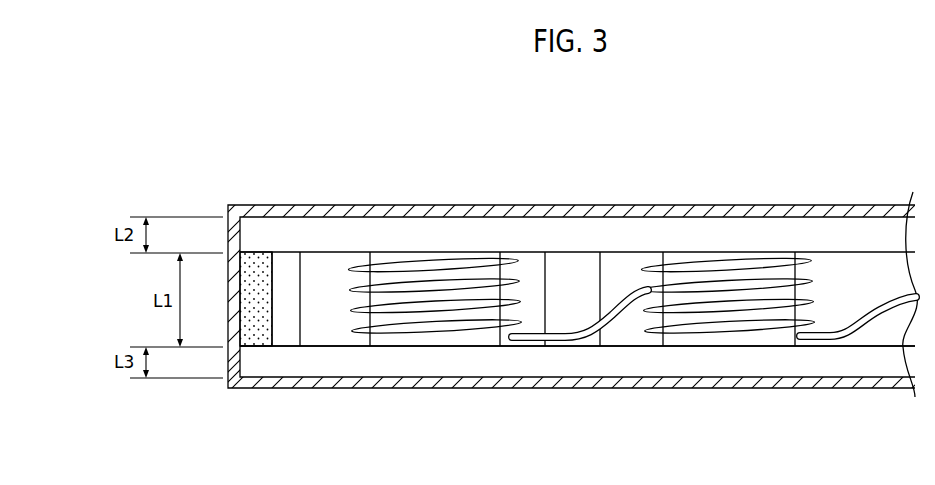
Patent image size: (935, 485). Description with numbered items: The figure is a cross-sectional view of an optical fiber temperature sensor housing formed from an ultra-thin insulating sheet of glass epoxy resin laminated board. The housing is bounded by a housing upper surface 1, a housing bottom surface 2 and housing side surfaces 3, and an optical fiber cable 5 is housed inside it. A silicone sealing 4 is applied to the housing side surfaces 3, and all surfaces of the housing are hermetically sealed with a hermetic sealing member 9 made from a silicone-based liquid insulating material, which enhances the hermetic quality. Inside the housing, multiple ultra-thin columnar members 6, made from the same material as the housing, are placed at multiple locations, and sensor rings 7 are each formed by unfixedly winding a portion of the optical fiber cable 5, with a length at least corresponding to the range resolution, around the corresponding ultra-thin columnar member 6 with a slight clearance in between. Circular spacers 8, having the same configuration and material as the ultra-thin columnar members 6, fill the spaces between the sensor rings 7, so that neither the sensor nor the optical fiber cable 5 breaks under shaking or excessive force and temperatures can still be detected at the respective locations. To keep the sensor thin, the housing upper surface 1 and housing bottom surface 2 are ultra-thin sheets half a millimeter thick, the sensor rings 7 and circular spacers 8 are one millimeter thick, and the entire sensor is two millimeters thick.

The housing upper surface 1 is at (430, 232).
The housing bottom surface 2 is at (336, 362).
The housing side surfaces 3 is at (288, 268).
The silicone sealing 4 is at (254, 332).
The optical fiber cable 5 is at (617, 305).
The ultra-thin columnar member 6 is at (437, 334).
The sensor ring 7 is at (735, 252).
The circular spacer 8 is at (570, 312).
The hermetic sealing member 9 is at (365, 212).